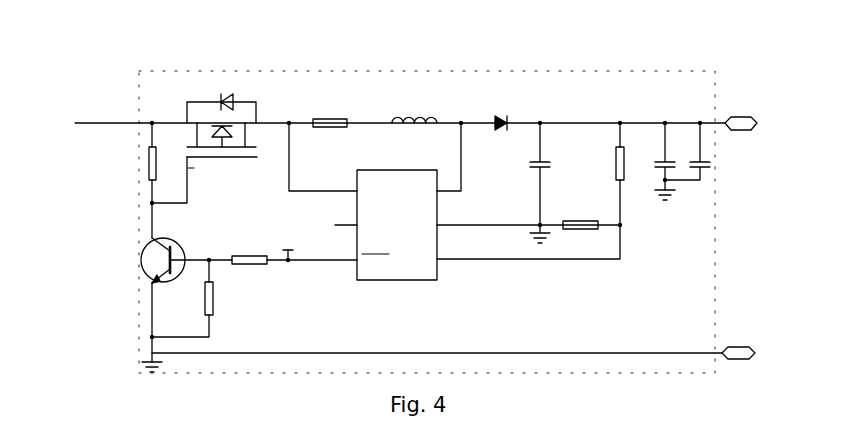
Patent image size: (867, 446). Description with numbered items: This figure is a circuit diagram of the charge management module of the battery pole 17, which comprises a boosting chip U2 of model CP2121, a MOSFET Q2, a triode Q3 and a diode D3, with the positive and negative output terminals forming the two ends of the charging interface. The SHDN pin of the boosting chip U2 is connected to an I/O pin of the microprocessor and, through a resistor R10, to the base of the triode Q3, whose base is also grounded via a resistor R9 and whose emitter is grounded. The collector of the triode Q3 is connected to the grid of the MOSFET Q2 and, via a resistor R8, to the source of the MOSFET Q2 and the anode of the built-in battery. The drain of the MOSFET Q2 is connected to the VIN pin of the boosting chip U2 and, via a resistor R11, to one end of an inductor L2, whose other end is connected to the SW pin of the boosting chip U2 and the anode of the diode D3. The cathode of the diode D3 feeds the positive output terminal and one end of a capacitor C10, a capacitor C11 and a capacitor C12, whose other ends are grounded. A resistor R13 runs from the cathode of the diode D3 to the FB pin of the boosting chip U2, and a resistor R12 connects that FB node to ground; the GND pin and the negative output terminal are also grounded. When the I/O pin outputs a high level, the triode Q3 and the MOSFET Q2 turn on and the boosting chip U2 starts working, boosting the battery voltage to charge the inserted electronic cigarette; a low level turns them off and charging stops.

The charge management module of the battery pole 17 is at (427, 71).
The MOSFET Q2 is at (204, 141).
The resistor R8 is at (163, 180).
The triode Q3 is at (186, 291).
The resistor R9 is at (193, 298).
The resistor R10 is at (294, 250).
The boosting chip U2 is at (454, 201).
The resistor R11 is at (330, 113).
The inductor L2 is at (414, 111).
The diode D3 is at (498, 113).
The capacitor C10 is at (528, 174).
The resistor R13 is at (606, 174).
The resistor R12 is at (580, 215).
The capacitor C11 is at (657, 161).
The capacitor C12 is at (687, 151).